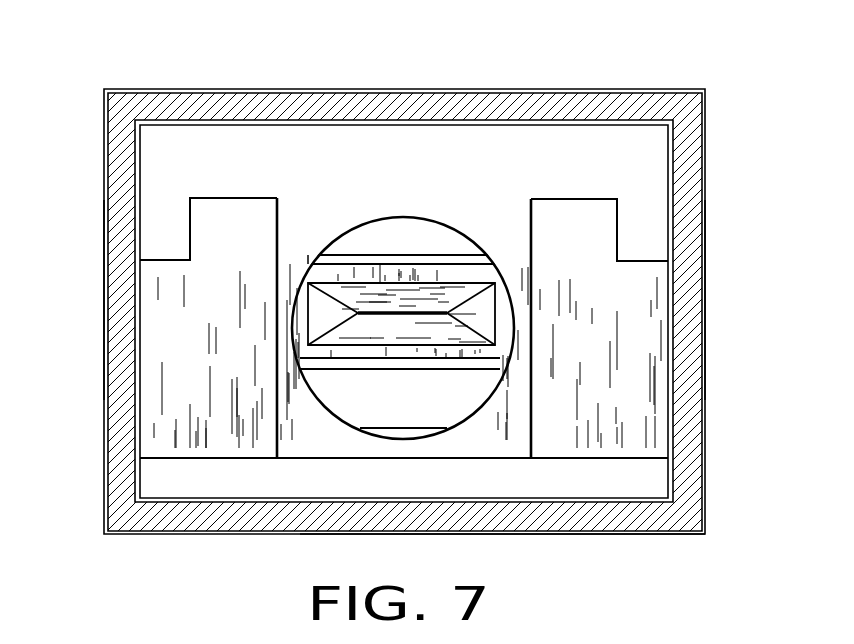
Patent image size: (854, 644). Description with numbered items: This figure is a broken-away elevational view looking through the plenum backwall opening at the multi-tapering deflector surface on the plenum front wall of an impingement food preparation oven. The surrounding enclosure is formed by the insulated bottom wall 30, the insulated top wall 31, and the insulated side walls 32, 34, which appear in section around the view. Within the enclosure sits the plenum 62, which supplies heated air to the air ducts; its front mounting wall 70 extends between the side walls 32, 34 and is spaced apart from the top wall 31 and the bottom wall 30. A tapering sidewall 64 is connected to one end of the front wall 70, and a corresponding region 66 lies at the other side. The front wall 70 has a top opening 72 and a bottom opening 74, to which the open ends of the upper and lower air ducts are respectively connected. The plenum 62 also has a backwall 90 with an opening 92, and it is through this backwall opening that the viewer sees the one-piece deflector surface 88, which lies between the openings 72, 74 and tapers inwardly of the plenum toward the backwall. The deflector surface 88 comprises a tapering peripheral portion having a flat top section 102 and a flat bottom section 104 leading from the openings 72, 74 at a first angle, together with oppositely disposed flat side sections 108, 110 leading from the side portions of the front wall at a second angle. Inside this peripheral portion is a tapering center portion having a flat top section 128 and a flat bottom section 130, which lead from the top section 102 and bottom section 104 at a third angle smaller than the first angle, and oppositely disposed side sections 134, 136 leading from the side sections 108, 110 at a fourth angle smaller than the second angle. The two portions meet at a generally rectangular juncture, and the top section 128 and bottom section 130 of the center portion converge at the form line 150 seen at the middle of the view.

The insulated bottom wall 30 is at (640, 537).
The insulated top wall 31 is at (236, 89).
The insulated side wall 32 is at (103, 272).
The insulated side wall 34 is at (705, 270).
The plenum 62 is at (365, 242).
The tapering sidewall 64 is at (168, 278).
The right support block 66 is at (627, 277).
The front mounting wall 70 is at (408, 416).
The top opening 72 is at (335, 250).
The bottom opening 74 is at (362, 428).
The multi-tapering deflector surface 88 is at (348, 373).
The backwall 90 is at (293, 216).
The opening 92 is at (341, 242).
The flat top section 102 is at (390, 272).
The flat bottom section 104 is at (368, 353).
The flat side section 108 is at (303, 337).
The flat side section 110 is at (503, 337).
The flat top section 128 is at (403, 295).
The flat bottom section 130 is at (447, 331).
The side section 134 is at (292, 288).
The side section 136 is at (487, 294).
The form line 150 is at (427, 312).